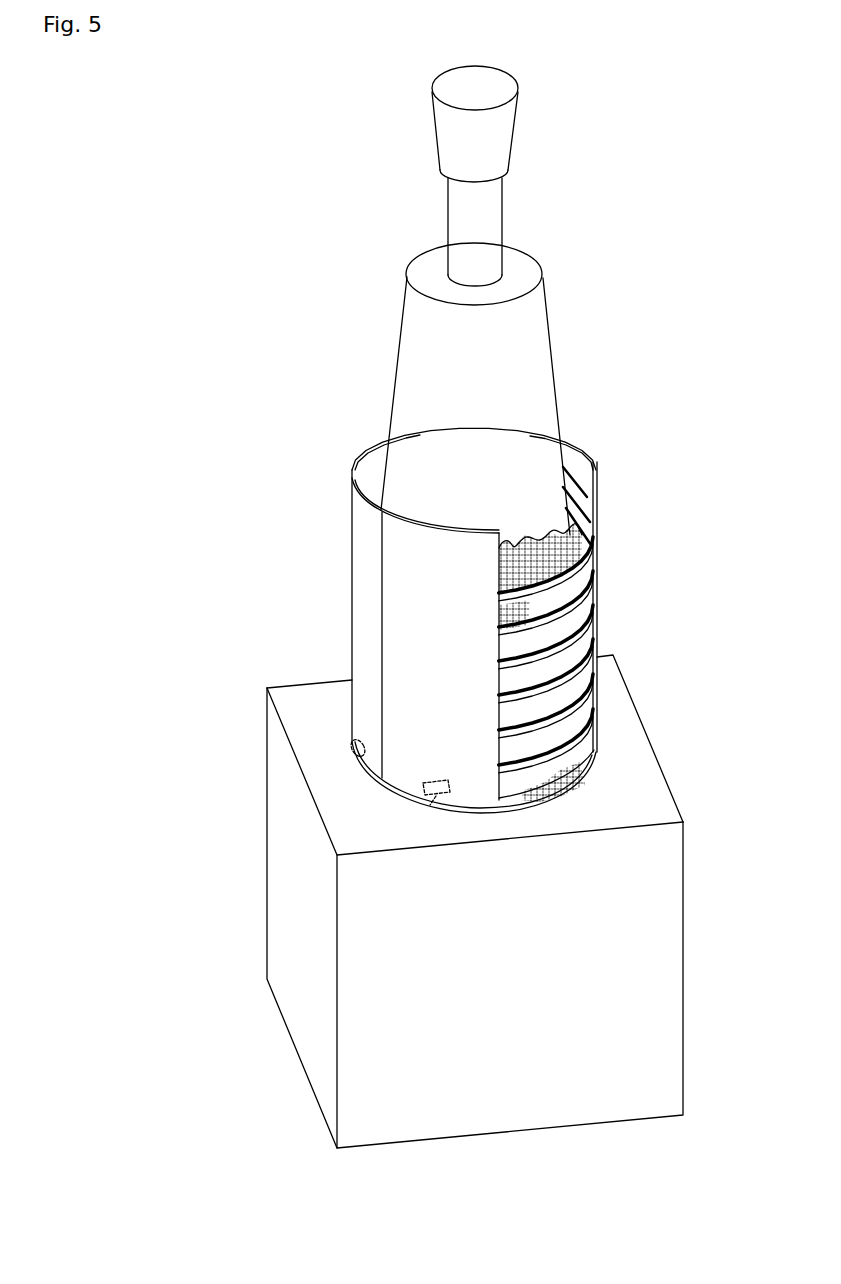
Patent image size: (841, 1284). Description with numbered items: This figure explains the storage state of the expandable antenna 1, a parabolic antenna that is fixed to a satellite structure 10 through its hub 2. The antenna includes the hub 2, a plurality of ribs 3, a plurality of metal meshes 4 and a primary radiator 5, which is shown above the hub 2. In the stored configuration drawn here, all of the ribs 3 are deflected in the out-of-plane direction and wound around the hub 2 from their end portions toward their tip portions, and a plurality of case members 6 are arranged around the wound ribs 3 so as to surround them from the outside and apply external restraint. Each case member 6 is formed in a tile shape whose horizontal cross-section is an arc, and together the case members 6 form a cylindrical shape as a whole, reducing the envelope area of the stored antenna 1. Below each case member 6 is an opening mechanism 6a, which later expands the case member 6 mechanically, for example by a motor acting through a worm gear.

The expandable antenna 1 is at (692, 185).
The hub 2 is at (542, 365).
The ribs 3 is at (591, 532).
The metal meshes 4 is at (537, 533).
The primary radiator 5 is at (512, 131).
The case members 6 is at (407, 607).
The opening mechanism 6a is at (430, 800).
The satellite structure 10 is at (640, 777).